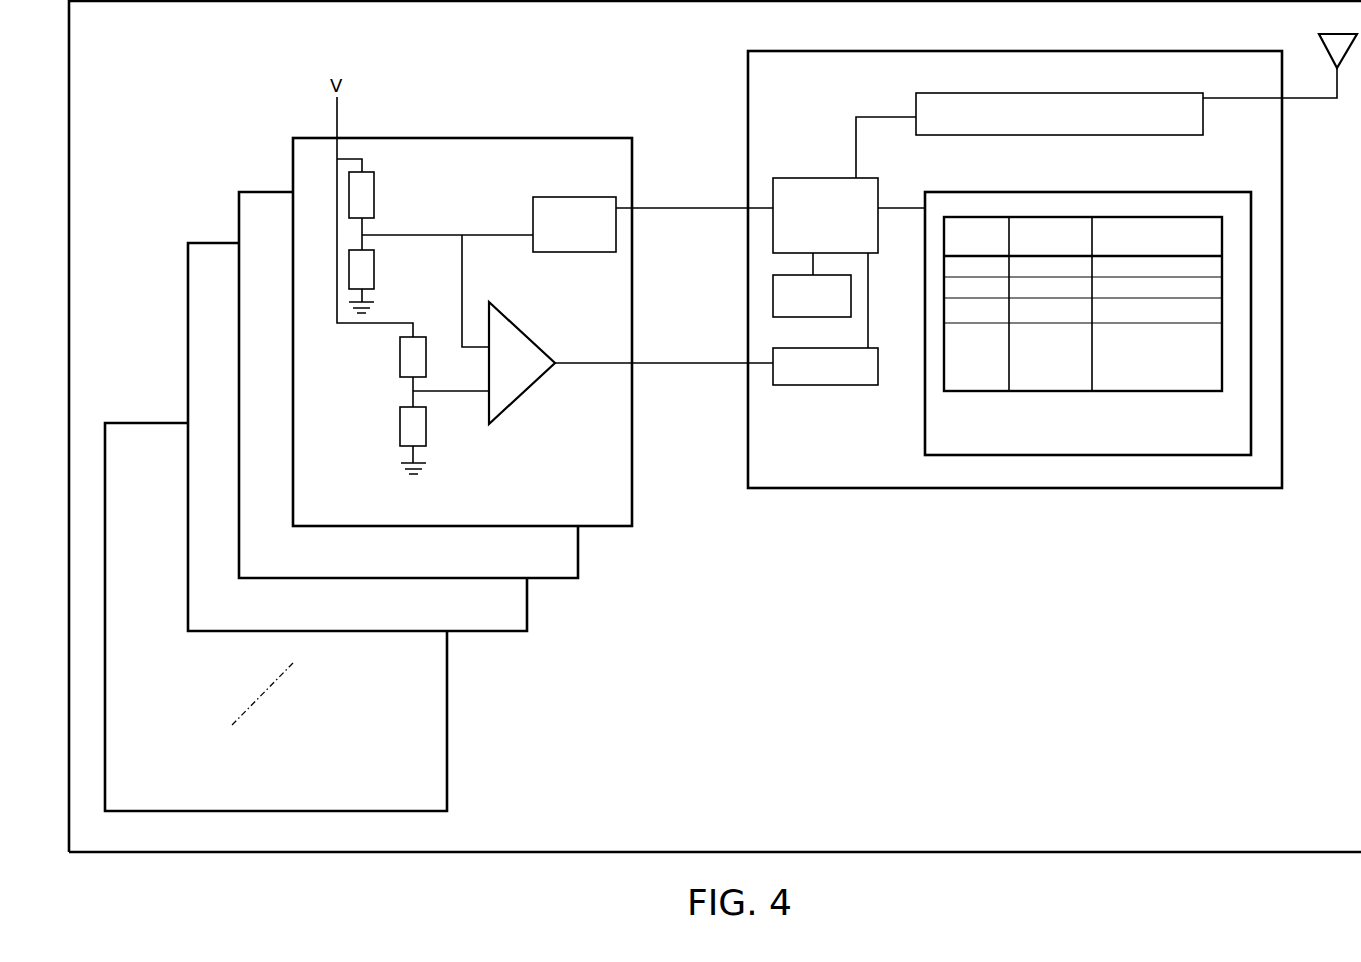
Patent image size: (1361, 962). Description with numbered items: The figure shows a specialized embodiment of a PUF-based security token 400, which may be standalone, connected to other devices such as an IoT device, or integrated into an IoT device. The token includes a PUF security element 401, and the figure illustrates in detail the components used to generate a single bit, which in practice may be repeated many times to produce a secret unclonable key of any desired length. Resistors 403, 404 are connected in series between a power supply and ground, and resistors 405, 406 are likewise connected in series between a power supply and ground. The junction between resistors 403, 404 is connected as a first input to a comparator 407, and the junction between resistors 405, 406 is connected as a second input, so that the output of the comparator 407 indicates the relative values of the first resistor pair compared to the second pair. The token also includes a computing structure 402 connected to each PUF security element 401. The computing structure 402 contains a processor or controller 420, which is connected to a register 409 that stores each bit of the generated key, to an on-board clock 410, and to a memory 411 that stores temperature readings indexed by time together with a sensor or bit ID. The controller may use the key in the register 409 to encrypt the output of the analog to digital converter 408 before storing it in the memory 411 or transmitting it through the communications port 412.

The PUF-based security token 400 is at (715, 426).
The PUF security element 401 is at (368, 474).
The computing structure 402 is at (1015, 287).
The resistor 403 is at (387, 195).
The resistor 404 is at (387, 269).
The resistor 405 is at (400, 358).
The resistor 406 is at (400, 428).
The comparator 407 is at (522, 363).
The analog to digital converter 408 is at (574, 224).
The register 409 is at (825, 366).
The clock 410 is at (812, 296).
The memory 411 is at (1088, 323).
The communications port 412 is at (1136, 84).
The processor or controller 420 is at (825, 215).